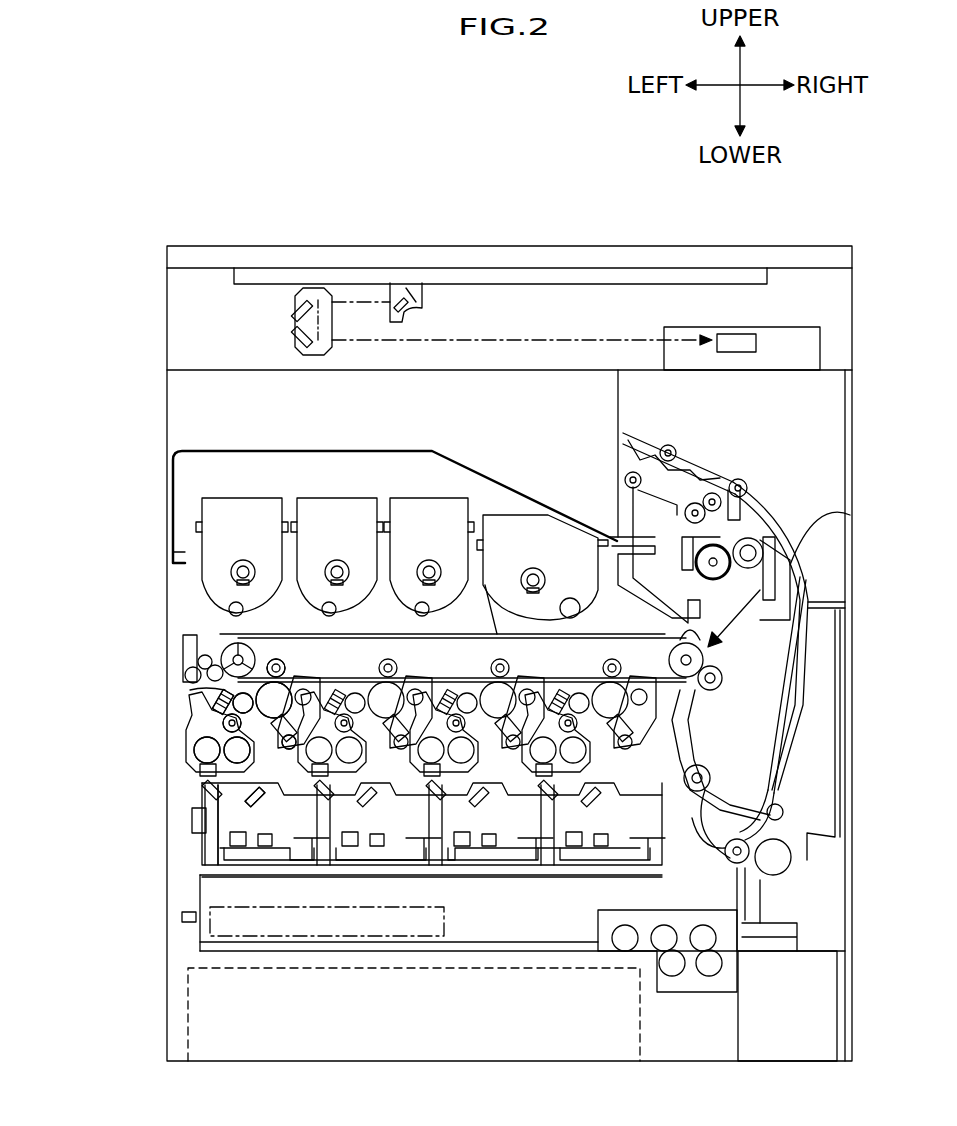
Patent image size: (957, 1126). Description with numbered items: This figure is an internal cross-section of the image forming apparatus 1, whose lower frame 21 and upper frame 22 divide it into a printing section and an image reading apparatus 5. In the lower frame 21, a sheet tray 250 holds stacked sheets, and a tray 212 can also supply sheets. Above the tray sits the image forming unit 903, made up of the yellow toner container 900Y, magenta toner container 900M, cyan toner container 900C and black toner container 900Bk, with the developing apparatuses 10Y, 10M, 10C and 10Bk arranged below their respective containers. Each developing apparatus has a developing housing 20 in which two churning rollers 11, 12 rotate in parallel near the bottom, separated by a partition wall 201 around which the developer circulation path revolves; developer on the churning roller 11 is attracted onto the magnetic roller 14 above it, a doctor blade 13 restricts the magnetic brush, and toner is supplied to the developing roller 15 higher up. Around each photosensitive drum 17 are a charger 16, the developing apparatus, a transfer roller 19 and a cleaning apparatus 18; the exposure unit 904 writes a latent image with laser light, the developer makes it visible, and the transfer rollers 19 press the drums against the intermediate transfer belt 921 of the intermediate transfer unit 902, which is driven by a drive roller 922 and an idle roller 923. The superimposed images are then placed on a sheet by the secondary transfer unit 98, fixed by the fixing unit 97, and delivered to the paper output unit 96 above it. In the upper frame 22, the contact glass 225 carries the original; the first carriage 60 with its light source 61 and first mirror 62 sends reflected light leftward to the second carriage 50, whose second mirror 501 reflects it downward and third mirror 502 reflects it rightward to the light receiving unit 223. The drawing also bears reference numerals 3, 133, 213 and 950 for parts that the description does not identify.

The image forming apparatus 1 is at (790, 243).
The image reading unit 3 is at (470, 254).
The image reading apparatus 5 is at (440, 320).
The developing apparatus 10Y is at (220, 755).
The developing apparatus 10M is at (325, 703).
The developing apparatus 10C is at (430, 703).
The developing apparatus 10Bk is at (548, 703).
The churning roller 11 is at (262, 772).
The churning roller 12 is at (205, 755).
The doctor blade 13 is at (250, 714).
The magnetic roller 14 is at (274, 700).
The developing roller 15 is at (214, 700).
The charger 16 is at (289, 750).
The photosensitive drum 17 is at (290, 677).
The cleaning apparatus 18 is at (287, 666).
The transfer roller 19 is at (244, 643).
The developing housing 20 is at (221, 726).
The lower frame 21 is at (182, 917).
The upper frame 22 is at (822, 318).
The second carriage 50 is at (220, 318).
The first carriage 60 is at (398, 290).
The light source 61 is at (420, 300).
The first mirror 62 is at (395, 302).
The paper output unit 96 is at (705, 500).
The fixing unit 97 is at (800, 540).
The secondary transfer unit 98 is at (812, 605).
The drive unit 133 is at (740, 915).
The partition wall 201 is at (237, 765).
The tray 212 is at (848, 700).
The toner container cover 213 is at (195, 452).
The light receiving unit 223 is at (756, 343).
The contact glass 225 is at (244, 272).
The sheet tray 250 is at (188, 1030).
The second mirror 501 is at (300, 302).
The third mirror 502 is at (300, 338).
The yellow toner container 900Y is at (245, 496).
The magenta toner container 900M is at (345, 496).
The cyan toner container 900C is at (432, 496).
The black toner container 900Bk is at (505, 513).
The intermediate transfer unit 902 is at (183, 659).
The image forming unit 903 is at (158, 757).
The exposure unit 904 is at (192, 822).
The intermediate transfer belt 921 is at (372, 645).
The drive roller 922 is at (705, 695).
The idle roller 923 is at (222, 690).
The fixing roller 950 is at (792, 877).